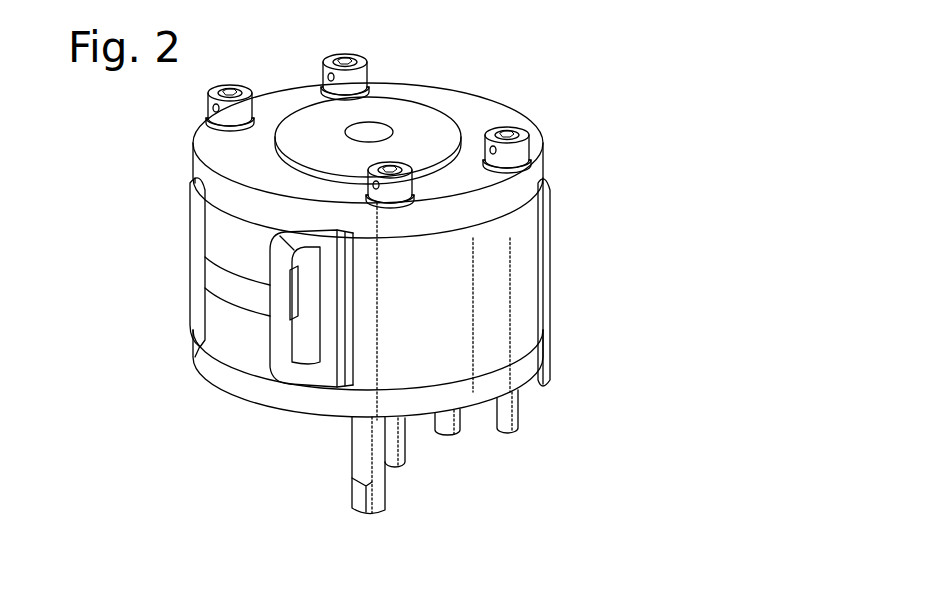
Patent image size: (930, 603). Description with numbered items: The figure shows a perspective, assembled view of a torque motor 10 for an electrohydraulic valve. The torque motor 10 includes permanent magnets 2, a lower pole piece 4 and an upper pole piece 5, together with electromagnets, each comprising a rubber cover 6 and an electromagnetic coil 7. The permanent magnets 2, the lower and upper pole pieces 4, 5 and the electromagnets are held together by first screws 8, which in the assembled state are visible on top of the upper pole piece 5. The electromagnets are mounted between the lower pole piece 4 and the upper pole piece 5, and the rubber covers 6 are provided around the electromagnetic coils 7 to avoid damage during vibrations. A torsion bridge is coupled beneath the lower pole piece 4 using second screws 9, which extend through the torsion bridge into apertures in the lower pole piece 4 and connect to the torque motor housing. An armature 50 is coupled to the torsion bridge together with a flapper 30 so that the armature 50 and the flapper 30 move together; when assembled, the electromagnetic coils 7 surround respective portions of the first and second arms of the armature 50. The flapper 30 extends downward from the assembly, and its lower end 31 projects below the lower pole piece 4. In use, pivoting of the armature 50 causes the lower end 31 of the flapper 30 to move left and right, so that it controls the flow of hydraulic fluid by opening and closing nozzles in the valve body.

The torque motor 10 is at (632, 184).
The permanent magnets 2 is at (458, 323).
The lower pole piece 4 is at (283, 402).
The upper pole piece 5 is at (455, 100).
The rubber cover 6 is at (197, 215).
The electromagnetic coil 7 is at (308, 340).
The first screws 8 is at (210, 110).
The second screws 9 is at (450, 425).
The flapper 30 is at (362, 448).
The lower end 31 is at (373, 503).
The armature 50 is at (232, 286).